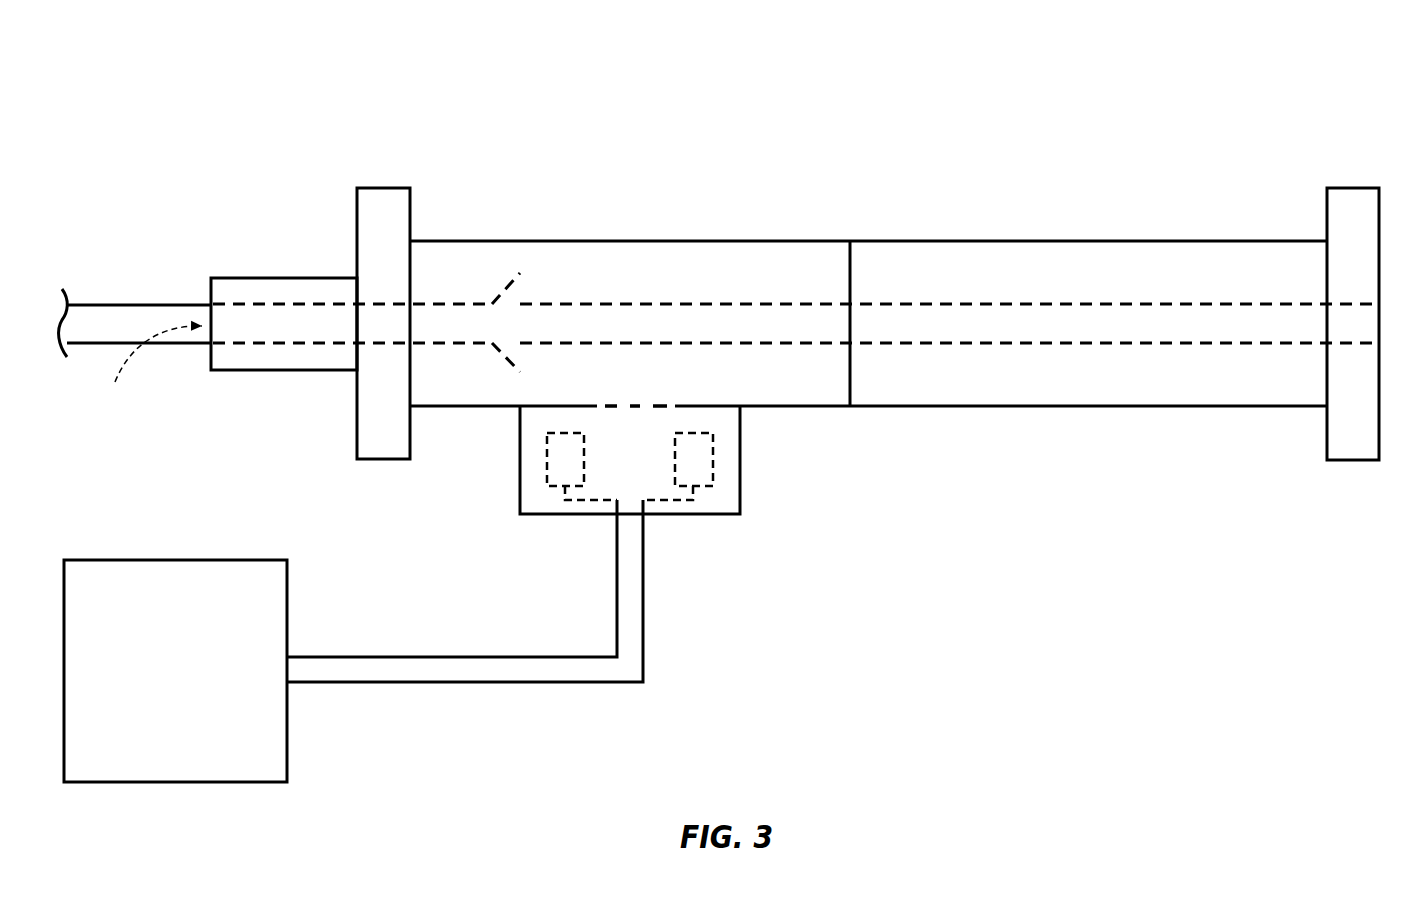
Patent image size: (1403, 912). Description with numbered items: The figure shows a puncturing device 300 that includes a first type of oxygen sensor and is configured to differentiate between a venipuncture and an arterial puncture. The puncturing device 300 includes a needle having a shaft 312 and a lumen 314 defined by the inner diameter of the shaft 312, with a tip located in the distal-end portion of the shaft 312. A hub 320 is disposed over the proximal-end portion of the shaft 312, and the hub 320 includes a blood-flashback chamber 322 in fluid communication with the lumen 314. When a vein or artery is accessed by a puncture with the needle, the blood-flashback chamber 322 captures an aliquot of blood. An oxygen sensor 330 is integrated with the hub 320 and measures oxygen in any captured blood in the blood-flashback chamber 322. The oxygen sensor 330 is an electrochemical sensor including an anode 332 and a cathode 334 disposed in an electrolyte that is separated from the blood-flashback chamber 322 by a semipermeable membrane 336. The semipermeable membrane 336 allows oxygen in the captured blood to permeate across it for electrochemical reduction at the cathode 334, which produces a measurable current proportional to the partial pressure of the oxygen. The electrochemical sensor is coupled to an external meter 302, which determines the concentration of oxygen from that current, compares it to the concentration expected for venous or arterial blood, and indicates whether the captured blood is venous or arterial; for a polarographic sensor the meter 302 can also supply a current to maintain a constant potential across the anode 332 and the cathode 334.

The puncturing device 300 is at (772, 130).
The external meter 302 is at (204, 791).
The shaft 312 is at (103, 310).
The lumen 314 is at (150, 368).
The hub 320 is at (1073, 441).
The blood-flashback chamber 322 is at (620, 285).
The oxygen sensor 330 is at (705, 522).
The anode 332 is at (547, 459).
The cathode 334 is at (713, 448).
The semipermeable membrane 336 is at (643, 406).